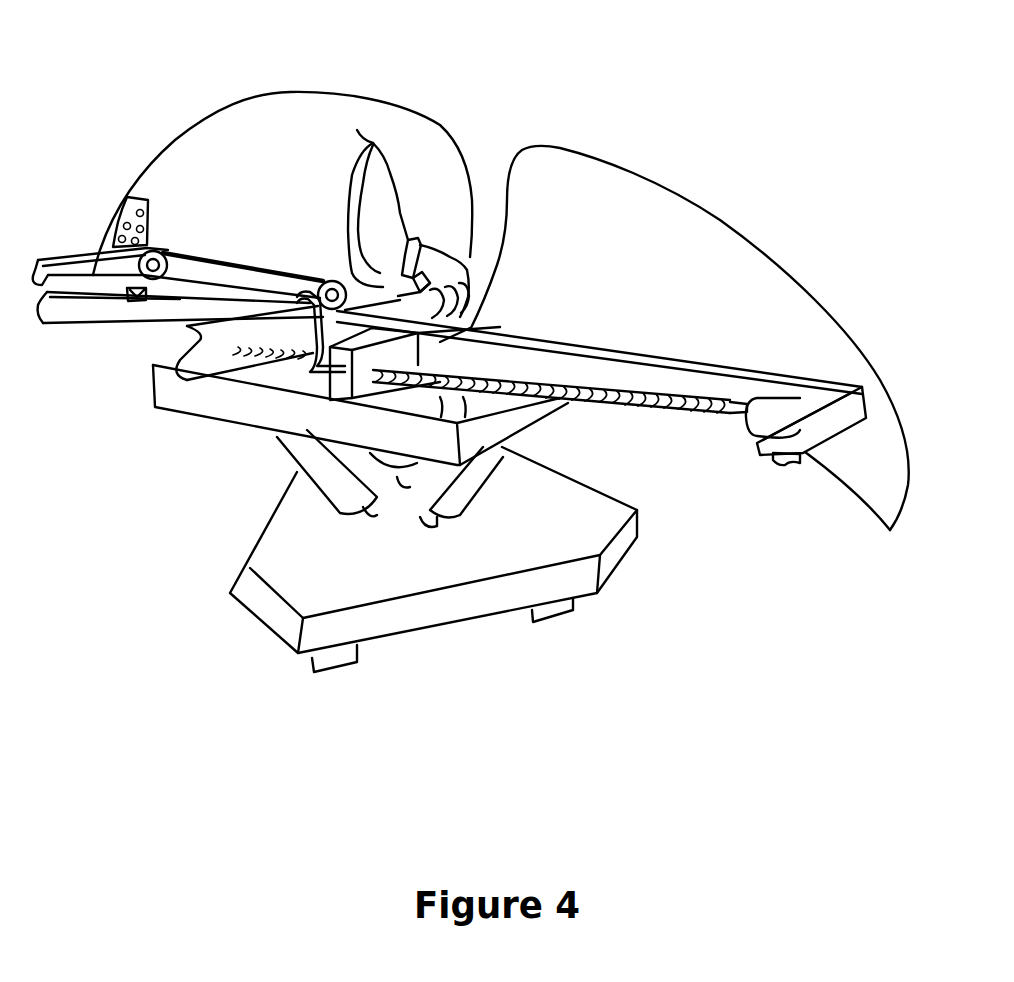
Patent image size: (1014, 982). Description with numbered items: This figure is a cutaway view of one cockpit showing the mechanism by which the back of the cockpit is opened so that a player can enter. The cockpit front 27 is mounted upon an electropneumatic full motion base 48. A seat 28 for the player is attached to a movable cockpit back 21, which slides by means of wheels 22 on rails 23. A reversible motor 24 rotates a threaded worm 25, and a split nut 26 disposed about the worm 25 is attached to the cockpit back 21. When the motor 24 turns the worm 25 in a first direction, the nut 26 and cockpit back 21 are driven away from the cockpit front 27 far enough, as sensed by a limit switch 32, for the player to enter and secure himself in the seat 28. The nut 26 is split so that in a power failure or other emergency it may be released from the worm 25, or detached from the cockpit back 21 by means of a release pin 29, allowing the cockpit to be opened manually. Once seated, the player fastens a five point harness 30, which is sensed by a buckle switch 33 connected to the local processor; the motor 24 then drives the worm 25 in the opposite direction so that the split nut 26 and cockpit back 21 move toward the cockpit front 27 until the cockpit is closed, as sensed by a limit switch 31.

The cockpit back 21 is at (173, 133).
The wheels 22 is at (327, 273).
The rails 23 is at (633, 372).
The reversible motor 24 is at (745, 440).
The threaded worm 25 is at (593, 413).
The split nut 26 is at (308, 430).
The cockpit front 27 is at (617, 190).
The seat 28 is at (377, 155).
The release pin 29 is at (308, 337).
The five point harness 30 is at (417, 233).
The limit switch 31 is at (422, 273).
The limit switch 32 is at (127, 302).
The buckle switch 33 is at (383, 323).
The full motion base 48 is at (262, 637).